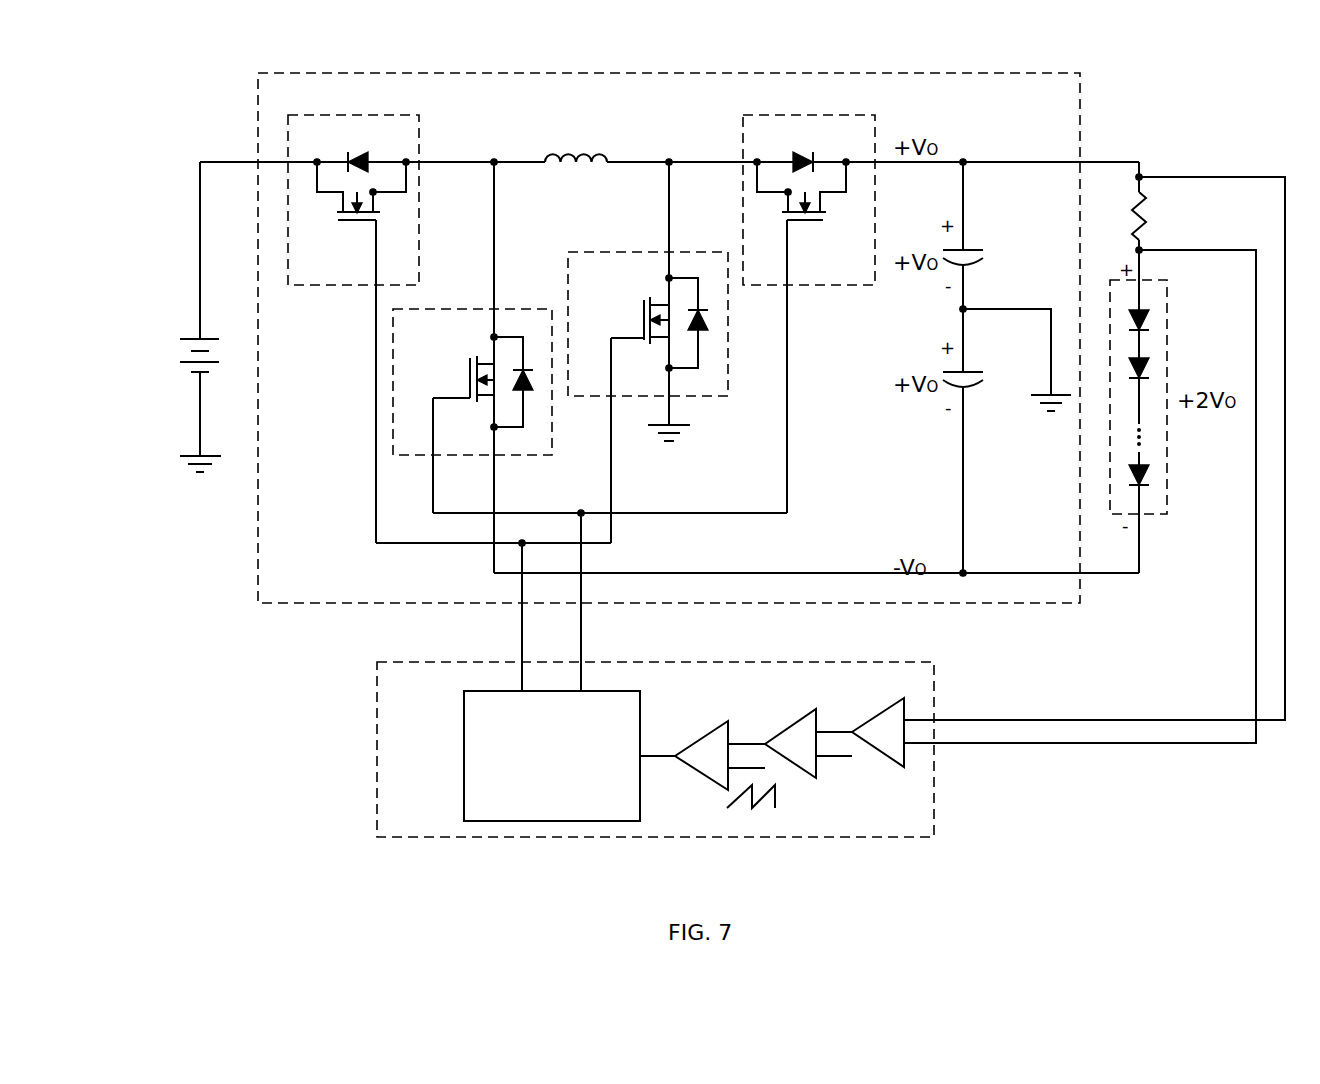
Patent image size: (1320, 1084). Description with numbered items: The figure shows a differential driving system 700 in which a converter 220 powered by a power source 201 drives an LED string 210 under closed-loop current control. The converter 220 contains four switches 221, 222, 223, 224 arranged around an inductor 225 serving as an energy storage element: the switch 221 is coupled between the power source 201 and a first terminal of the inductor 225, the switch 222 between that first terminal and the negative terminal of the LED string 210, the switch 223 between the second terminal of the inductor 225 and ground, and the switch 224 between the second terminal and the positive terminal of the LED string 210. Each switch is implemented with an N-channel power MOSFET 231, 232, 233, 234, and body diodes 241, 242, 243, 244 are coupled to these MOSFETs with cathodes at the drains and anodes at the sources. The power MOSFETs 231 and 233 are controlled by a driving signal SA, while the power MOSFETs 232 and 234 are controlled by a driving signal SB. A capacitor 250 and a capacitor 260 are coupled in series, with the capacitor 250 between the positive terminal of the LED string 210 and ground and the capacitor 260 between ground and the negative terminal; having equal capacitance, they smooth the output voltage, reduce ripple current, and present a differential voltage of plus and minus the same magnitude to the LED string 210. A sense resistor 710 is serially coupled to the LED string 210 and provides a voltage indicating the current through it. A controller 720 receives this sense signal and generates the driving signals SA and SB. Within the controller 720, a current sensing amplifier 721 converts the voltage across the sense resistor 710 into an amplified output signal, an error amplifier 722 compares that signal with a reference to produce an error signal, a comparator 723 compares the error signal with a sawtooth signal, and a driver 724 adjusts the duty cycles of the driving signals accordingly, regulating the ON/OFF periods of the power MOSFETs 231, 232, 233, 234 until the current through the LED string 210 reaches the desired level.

The differential driving system 700 is at (236, 131).
The power source 201 is at (190, 338).
The converter 220 is at (623, 603).
The switch 221 is at (353, 183).
The switch 222 is at (486, 401).
The switch 223 is at (660, 341).
The switch 224 is at (809, 183).
The inductor 225 is at (586, 153).
The power MOSFET 231 is at (352, 222).
The power MOSFET 232 is at (468, 368).
The power MOSFET 233 is at (642, 310).
The power MOSFET 234 is at (808, 222).
The body diode 241 is at (354, 157).
The body diode 242 is at (528, 366).
The body diode 243 is at (702, 308).
The body diode 244 is at (800, 155).
The capacitor 250 is at (975, 250).
The capacitor 260 is at (975, 372).
The sense resistor 710 is at (1146, 212).
The LED string 210 is at (1167, 337).
The controller 720 is at (628, 749).
The current sensing amplifier 721 is at (882, 707).
The error amplifier 722 is at (800, 714).
The comparator 723 is at (707, 732).
The driver 724 is at (464, 748).